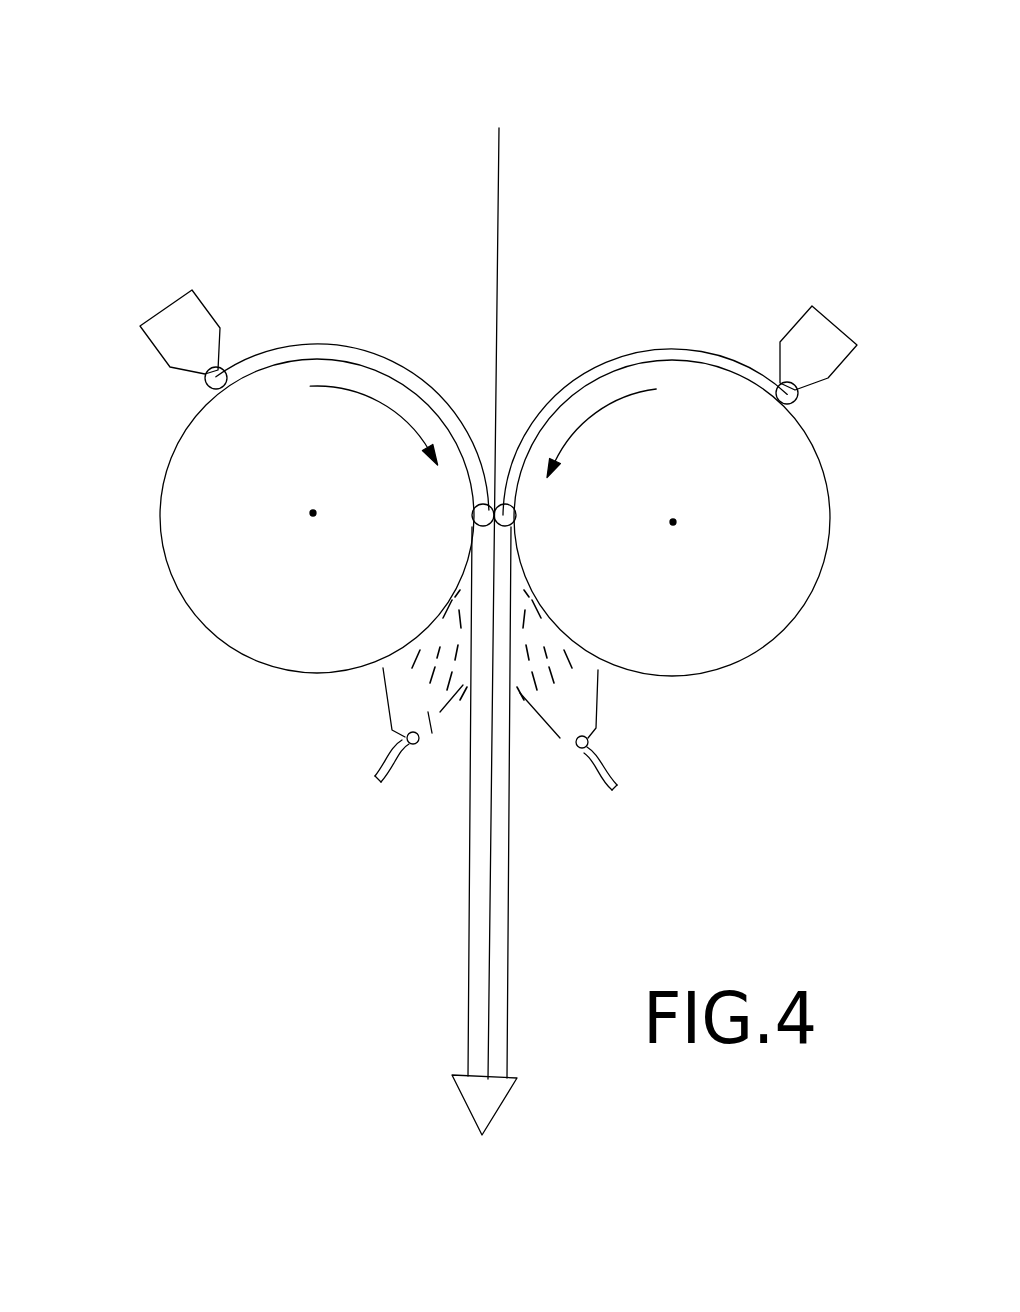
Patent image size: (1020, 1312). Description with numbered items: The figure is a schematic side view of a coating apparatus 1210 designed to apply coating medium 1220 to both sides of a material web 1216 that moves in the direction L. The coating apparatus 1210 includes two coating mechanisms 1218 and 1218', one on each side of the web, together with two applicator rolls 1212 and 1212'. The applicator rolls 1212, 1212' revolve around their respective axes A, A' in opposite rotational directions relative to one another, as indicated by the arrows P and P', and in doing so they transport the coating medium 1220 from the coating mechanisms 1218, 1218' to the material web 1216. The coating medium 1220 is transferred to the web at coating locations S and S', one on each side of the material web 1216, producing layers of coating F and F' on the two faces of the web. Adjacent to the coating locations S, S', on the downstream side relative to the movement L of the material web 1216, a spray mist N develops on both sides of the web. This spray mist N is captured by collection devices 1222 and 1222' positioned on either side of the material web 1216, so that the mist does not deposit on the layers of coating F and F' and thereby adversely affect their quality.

The coating apparatus 1210 is at (699, 95).
The applicator roll 1212 is at (307, 547).
The applicator roll 1212' is at (693, 543).
The material web 1216 is at (495, 183).
The coating mechanism 1218 is at (138, 312).
The coating mechanism 1218' is at (839, 310).
The coating medium 1220 is at (342, 342).
The collection device 1222 is at (419, 762).
The collection device 1222' is at (568, 763).
The coating location S is at (448, 521).
The coating location S' is at (547, 500).
The rotational direction P is at (374, 425).
The rotational direction P' is at (637, 433).
The axis A is at (285, 556).
The axis A' is at (718, 510).
The spray mist N is at (444, 641).
The layer of coating F is at (426, 801).
The layer of coating F' is at (552, 802).
The direction of movement L is at (500, 1105).